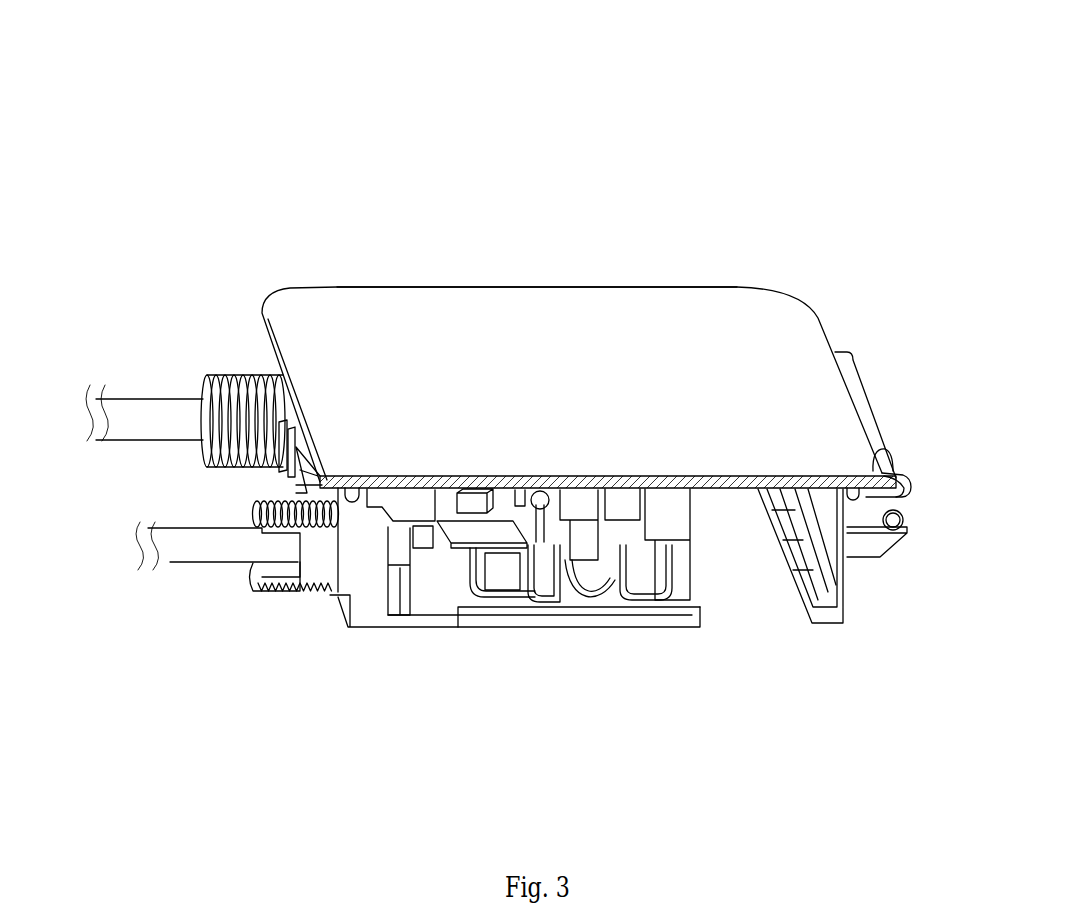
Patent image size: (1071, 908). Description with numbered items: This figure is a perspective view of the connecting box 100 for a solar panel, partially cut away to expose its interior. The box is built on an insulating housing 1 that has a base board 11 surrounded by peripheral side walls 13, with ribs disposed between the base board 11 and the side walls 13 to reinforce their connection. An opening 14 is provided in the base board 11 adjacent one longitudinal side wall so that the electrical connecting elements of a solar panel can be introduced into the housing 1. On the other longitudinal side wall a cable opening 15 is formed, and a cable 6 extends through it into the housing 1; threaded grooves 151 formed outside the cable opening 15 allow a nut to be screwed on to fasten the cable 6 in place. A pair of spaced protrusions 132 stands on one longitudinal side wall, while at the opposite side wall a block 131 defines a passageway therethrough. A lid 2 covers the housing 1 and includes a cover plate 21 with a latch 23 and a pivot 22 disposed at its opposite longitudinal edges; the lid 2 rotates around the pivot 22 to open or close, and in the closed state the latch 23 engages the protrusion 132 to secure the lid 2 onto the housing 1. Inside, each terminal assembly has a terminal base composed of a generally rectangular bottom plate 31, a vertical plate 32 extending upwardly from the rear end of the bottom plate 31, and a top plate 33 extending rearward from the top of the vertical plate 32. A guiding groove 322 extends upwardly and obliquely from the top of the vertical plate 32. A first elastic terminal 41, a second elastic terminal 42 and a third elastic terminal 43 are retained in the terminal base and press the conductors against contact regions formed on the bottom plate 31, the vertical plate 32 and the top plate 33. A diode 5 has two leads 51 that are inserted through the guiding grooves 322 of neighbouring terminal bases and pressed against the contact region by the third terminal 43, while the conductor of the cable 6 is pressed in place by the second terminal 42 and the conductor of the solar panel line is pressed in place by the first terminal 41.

The connecting box 100 is at (900, 44).
The insulating housing 1 is at (347, 628).
The base board 11 is at (545, 623).
The peripheral side walls 13 is at (843, 590).
The blocks 131 is at (904, 486).
The protrusions 132 is at (298, 482).
The opening 14 is at (753, 590).
The cable opening 15 is at (253, 577).
The threaded grooves 151 is at (237, 374).
The lid 2 is at (790, 291).
The cover plate 21 is at (362, 305).
The pivot 22 is at (898, 521).
The latches 23 is at (293, 467).
The bottom plate 31 is at (610, 599).
The vertical plate 32 is at (528, 590).
The guiding groove 322 is at (592, 490).
The top plate 33 is at (468, 530).
The first elastic terminal 41 is at (670, 601).
The second elastic terminal 42 is at (500, 585).
The third elastic terminal 43 is at (575, 599).
The diode 5 is at (543, 487).
The leads 51 is at (518, 497).
The cable 6 is at (130, 398).